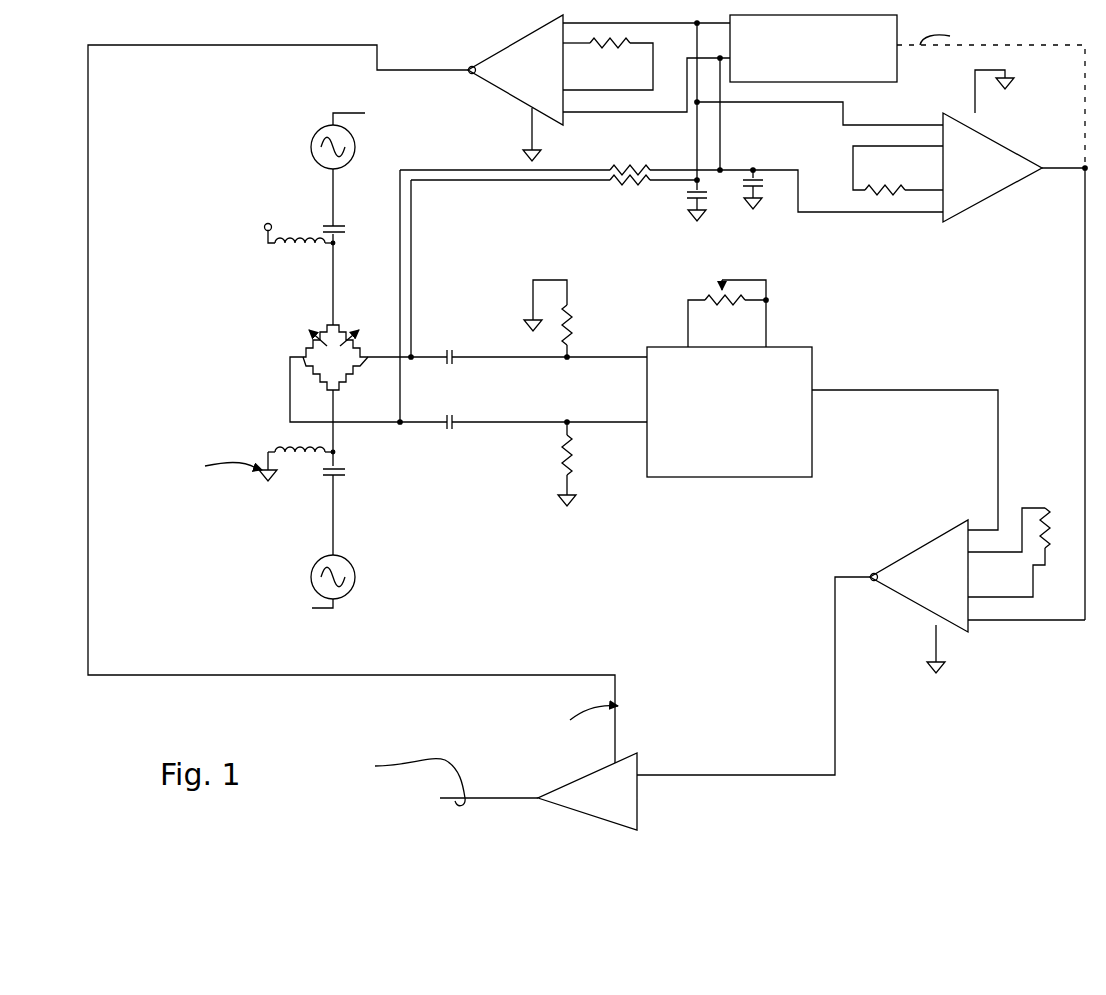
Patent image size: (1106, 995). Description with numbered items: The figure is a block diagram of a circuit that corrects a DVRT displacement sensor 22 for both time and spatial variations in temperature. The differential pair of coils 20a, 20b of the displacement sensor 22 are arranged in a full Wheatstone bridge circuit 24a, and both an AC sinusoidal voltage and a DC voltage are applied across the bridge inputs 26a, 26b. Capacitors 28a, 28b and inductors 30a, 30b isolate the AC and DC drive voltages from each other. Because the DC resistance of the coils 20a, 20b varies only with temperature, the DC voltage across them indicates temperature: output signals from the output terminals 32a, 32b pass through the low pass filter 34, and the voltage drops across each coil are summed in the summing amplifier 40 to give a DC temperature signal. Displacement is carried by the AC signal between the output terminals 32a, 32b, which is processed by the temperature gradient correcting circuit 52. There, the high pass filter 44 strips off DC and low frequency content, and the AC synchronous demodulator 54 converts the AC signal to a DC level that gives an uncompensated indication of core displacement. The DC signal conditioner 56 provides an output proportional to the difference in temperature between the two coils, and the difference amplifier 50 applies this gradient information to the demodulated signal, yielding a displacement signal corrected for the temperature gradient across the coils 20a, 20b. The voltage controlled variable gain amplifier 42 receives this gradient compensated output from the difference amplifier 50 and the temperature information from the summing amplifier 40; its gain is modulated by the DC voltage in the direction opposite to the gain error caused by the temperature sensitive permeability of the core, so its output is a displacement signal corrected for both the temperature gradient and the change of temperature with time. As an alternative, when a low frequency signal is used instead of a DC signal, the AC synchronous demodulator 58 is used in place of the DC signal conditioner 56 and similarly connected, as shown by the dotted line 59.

The coil 20a is at (294, 338).
The coil 20b is at (367, 342).
The displacement sensor 22 is at (254, 237).
The Wheatstone bridge circuit 24a is at (273, 383).
The bridge input 26a is at (333, 325).
The bridge input 26b is at (340, 393).
The capacitor 28a is at (345, 228).
The capacitor 28b is at (356, 478).
The inductor 30a is at (300, 243).
The inductor 30b is at (318, 470).
The output terminal 32a is at (300, 353).
The output terminal 32b is at (369, 355).
The low pass filter 34 is at (675, 199).
The summing amplifier 40 is at (519, 59).
The voltage controlled variable gain amplifier 42 is at (616, 775).
The high pass filter 44 is at (555, 441).
The difference amplifier 50 is at (930, 580).
The temperature gradient correcting circuit 52 is at (1082, 313).
The AC synchronous demodulator 54 is at (778, 357).
The DC signal conditioner 56 is at (985, 156).
The AC synchronous demodulator 58 is at (884, 68).
The dotted line 59 is at (1057, 42).